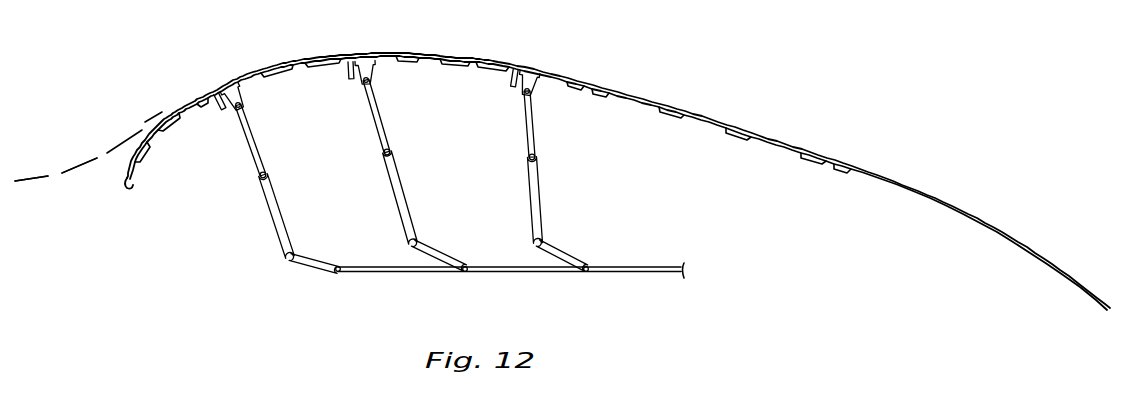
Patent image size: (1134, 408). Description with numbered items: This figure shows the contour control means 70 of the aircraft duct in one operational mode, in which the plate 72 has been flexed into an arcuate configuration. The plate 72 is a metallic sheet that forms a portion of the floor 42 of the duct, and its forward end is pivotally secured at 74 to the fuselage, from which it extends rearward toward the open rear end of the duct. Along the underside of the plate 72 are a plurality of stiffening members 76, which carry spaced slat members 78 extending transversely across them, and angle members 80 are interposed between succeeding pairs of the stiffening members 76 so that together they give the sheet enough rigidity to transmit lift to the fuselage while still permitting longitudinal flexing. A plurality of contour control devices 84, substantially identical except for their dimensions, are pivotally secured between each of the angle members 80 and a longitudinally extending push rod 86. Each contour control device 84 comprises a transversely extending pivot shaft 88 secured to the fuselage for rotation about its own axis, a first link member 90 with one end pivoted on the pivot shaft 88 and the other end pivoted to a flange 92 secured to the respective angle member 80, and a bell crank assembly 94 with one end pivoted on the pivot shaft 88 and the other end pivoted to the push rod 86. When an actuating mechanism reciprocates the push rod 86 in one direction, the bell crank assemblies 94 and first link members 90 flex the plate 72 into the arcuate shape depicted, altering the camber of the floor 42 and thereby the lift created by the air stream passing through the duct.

The floor 42 is at (87, 158).
The contour control means 70 is at (602, 80).
The plate 72 is at (130, 163).
The pivot 74 is at (129, 188).
The stiffening members 76 is at (167, 128).
The slat members 78 is at (187, 115).
The angle members 80 is at (233, 87).
The contour control devices 84 is at (292, 222).
The push rod 86 is at (652, 265).
The pivot shaft 88 is at (268, 172).
The first link member 90 is at (253, 157).
The flange 92 is at (242, 86).
The bell crank assembly 94 is at (273, 220).